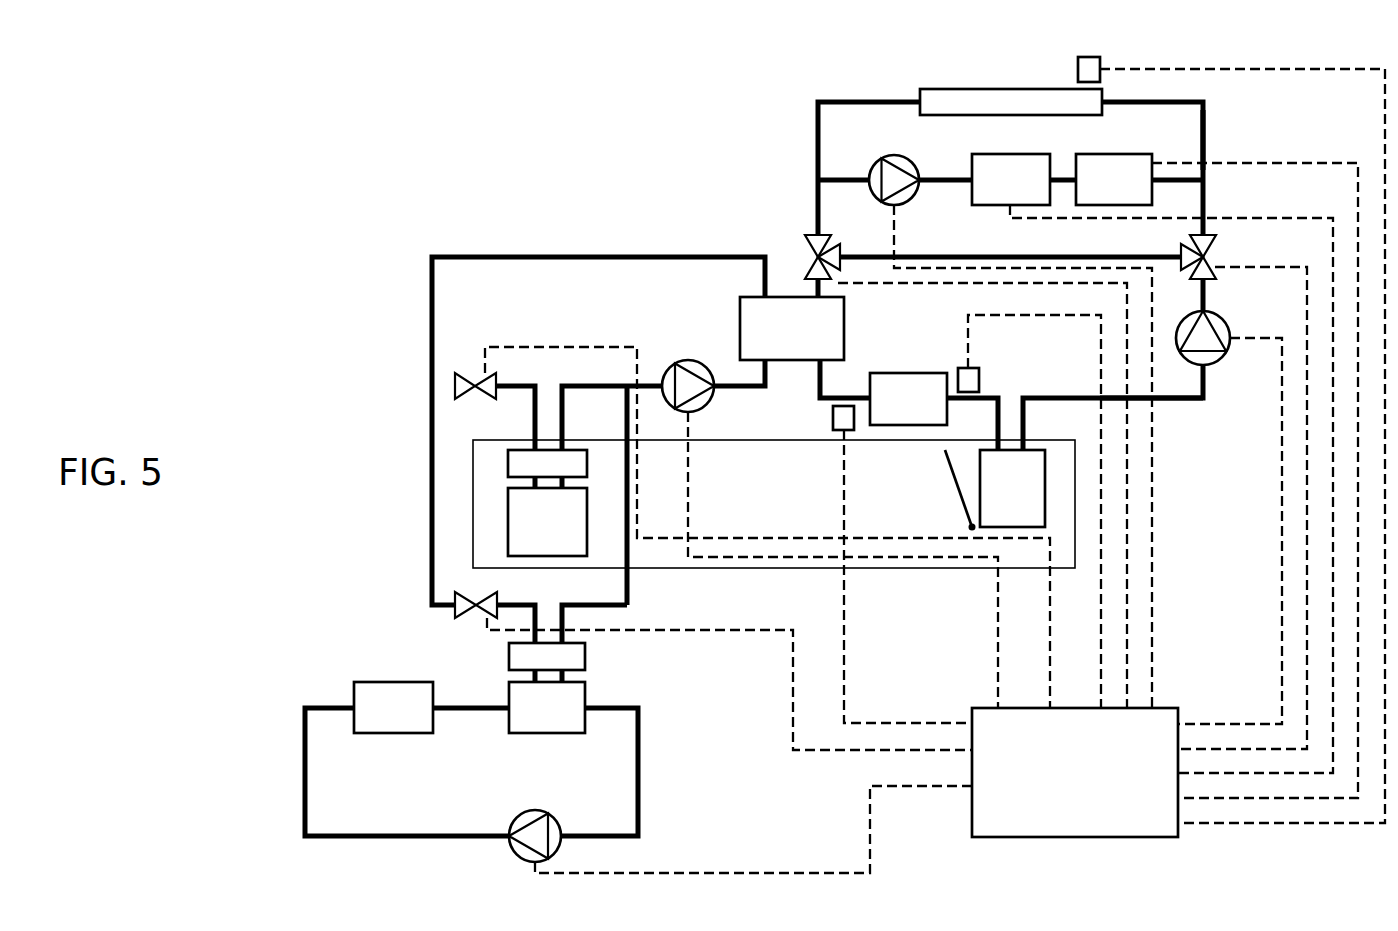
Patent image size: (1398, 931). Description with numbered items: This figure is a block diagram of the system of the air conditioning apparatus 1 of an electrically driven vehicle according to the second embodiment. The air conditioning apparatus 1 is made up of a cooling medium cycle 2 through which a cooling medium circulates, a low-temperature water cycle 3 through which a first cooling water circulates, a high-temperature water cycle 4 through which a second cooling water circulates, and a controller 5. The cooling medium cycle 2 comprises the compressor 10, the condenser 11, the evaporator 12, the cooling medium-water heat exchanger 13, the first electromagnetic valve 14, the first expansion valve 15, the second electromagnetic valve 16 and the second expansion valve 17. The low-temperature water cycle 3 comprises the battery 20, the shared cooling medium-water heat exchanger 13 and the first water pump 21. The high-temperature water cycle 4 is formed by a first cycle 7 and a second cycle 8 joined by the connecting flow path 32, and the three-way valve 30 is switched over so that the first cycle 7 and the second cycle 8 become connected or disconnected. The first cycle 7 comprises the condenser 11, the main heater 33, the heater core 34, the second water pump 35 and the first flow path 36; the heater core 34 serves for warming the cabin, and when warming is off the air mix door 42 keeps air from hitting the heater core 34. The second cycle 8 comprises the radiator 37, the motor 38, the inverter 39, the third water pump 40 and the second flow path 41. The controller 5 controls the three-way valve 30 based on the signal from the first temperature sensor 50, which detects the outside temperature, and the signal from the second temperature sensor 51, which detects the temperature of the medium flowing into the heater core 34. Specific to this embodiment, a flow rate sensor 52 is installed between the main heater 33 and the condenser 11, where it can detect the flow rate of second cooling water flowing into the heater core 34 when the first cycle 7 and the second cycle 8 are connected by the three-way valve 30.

The air conditioning apparatus 1 is at (330, 272).
The cooling medium cycle 2 is at (564, 236).
The low-temperature water cycle 3 is at (278, 700).
The high-temperature water cycle 4 is at (941, 62).
The controller 5 is at (980, 708).
The first cycle 7 is at (1223, 452).
The second cycle 8 is at (800, 114).
The compressor 10 is at (682, 365).
The condenser 11 is at (778, 360).
The evaporator 12 is at (508, 518).
The cooling medium-water heat exchanger 13 is at (565, 733).
The first electromagnetic valve 14 is at (480, 373).
The first expansion valve 15 is at (508, 465).
The second electromagnetic valve 16 is at (462, 618).
The second expansion valve 17 is at (585, 657).
The battery 20 is at (373, 733).
The first water pump 21 is at (512, 825).
The three-way valve 30 is at (808, 244).
The connecting flow path 32 is at (818, 207).
The main heater 33 is at (890, 373).
The heater core 34 is at (1047, 478).
The second water pump 35 is at (1210, 365).
The first flow path 36 is at (1168, 400).
The radiator 37 is at (920, 91).
The motor 38 is at (1116, 154).
The inverter 39 is at (972, 165).
The third water pump 40 is at (894, 205).
The second flow path 41 is at (1204, 128).
The air mix door 42 is at (956, 487).
The first temperature sensor 50 is at (1078, 69).
The second temperature sensor 51 is at (980, 380).
The flow rate sensor 52 is at (833, 425).